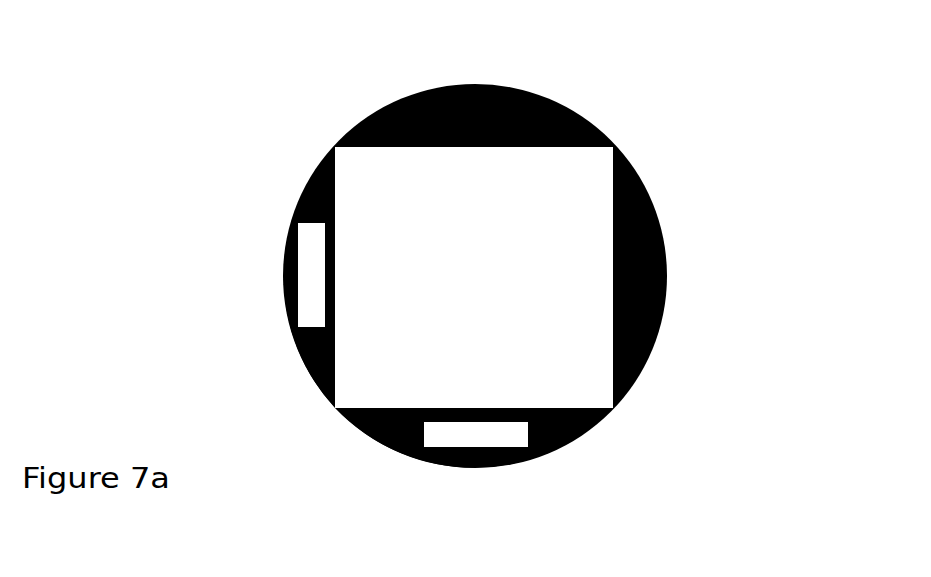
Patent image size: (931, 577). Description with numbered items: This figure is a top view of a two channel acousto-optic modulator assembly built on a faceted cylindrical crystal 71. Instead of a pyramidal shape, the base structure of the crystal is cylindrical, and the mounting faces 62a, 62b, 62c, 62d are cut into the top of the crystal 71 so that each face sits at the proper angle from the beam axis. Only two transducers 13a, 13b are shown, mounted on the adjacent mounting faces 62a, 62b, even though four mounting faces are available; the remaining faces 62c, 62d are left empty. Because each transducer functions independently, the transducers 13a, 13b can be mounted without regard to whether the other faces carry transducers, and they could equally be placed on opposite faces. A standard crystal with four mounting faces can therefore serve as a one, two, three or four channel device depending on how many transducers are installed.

The faceted cylindrical crystal 71 is at (628, 142).
The mounting face 62a is at (565, 448).
The mounting face 62b is at (307, 370).
The mounting face 62c is at (430, 90).
The mounting face 62d is at (668, 257).
The transducer 13a is at (460, 438).
The transducer 13b is at (307, 250).